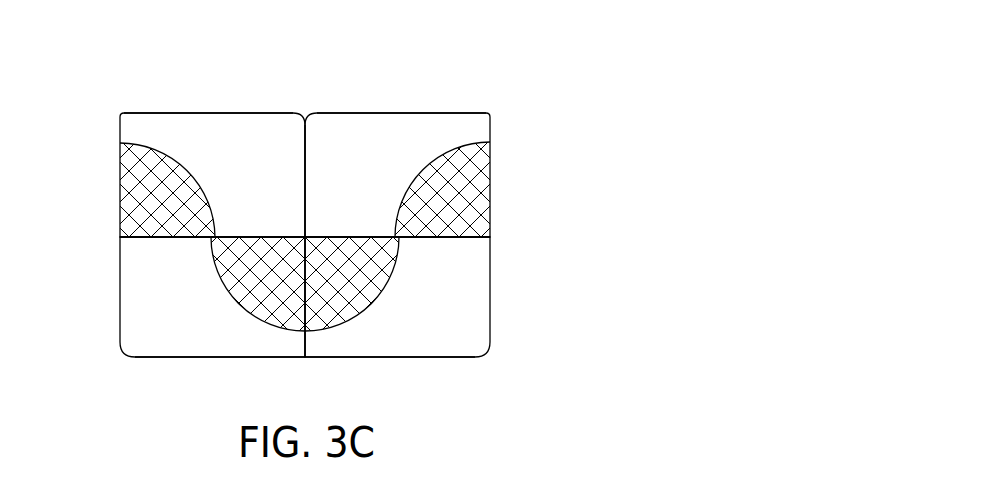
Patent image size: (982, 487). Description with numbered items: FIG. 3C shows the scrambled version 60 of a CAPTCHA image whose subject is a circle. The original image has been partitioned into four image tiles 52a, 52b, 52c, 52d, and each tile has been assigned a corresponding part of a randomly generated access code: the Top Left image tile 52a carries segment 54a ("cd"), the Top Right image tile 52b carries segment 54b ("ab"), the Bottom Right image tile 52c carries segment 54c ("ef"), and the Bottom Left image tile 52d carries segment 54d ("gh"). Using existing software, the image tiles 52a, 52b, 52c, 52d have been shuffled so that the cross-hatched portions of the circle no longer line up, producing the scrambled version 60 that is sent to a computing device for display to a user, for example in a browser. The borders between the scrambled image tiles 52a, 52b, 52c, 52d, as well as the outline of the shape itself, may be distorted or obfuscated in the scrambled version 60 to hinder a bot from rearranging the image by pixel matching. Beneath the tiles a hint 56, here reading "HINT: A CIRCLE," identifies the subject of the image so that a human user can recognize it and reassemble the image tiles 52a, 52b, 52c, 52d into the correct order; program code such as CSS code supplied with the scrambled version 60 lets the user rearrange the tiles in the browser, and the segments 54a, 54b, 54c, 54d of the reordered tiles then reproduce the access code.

The image tile 52a is at (437, 112).
The image tile 52b is at (178, 112).
The image tile 52c is at (491, 295).
The image tile 52d is at (119, 296).
The segment 54a is at (367, 133).
The segment 54b is at (243, 133).
The segment 54c is at (425, 342).
The segment 54d is at (190, 342).
The hint 56 is at (371, 389).
The scrambled version 60 is at (534, 119).